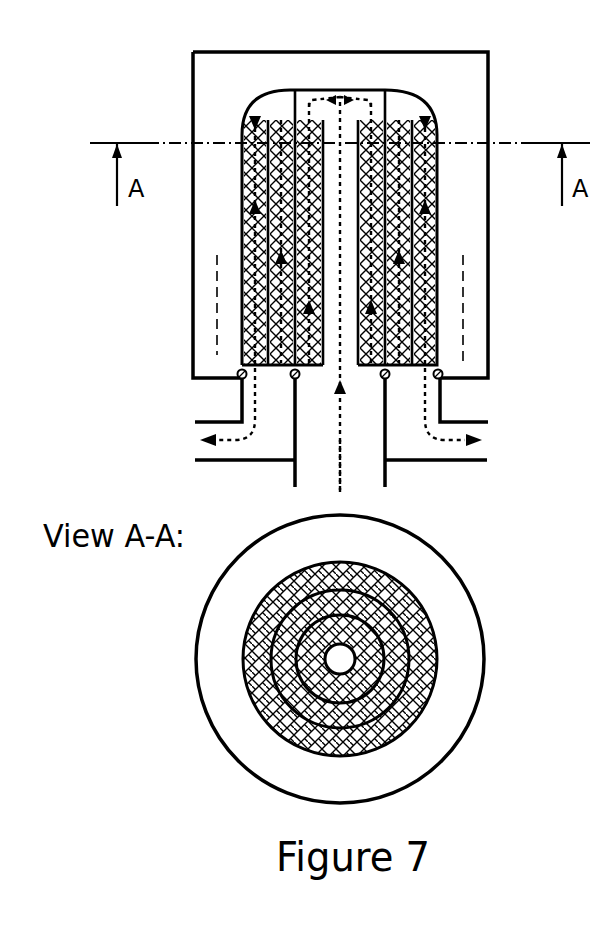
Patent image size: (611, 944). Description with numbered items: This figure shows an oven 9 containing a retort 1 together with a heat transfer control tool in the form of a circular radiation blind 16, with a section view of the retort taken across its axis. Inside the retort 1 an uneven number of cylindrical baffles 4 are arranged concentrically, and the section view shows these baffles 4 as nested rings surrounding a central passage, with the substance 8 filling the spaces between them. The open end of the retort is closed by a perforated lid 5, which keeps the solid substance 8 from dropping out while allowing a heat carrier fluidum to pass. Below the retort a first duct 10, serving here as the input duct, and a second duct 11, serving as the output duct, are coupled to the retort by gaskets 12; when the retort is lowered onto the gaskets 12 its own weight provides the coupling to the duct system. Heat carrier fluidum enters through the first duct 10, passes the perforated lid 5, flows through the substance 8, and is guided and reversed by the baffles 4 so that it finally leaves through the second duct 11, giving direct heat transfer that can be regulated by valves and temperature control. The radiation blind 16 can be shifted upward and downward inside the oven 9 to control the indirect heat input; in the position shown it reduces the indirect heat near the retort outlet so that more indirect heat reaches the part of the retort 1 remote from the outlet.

The retort 1 is at (235, 96).
The baffle 4 is at (360, 658).
The perforated lid 5 is at (433, 360).
The substance 8 is at (258, 638).
The oven 9 is at (491, 78).
The first duct 10 is at (370, 463).
The second duct 11 is at (458, 428).
The gasket 12 is at (240, 368).
The radiation blind 16 is at (215, 282).